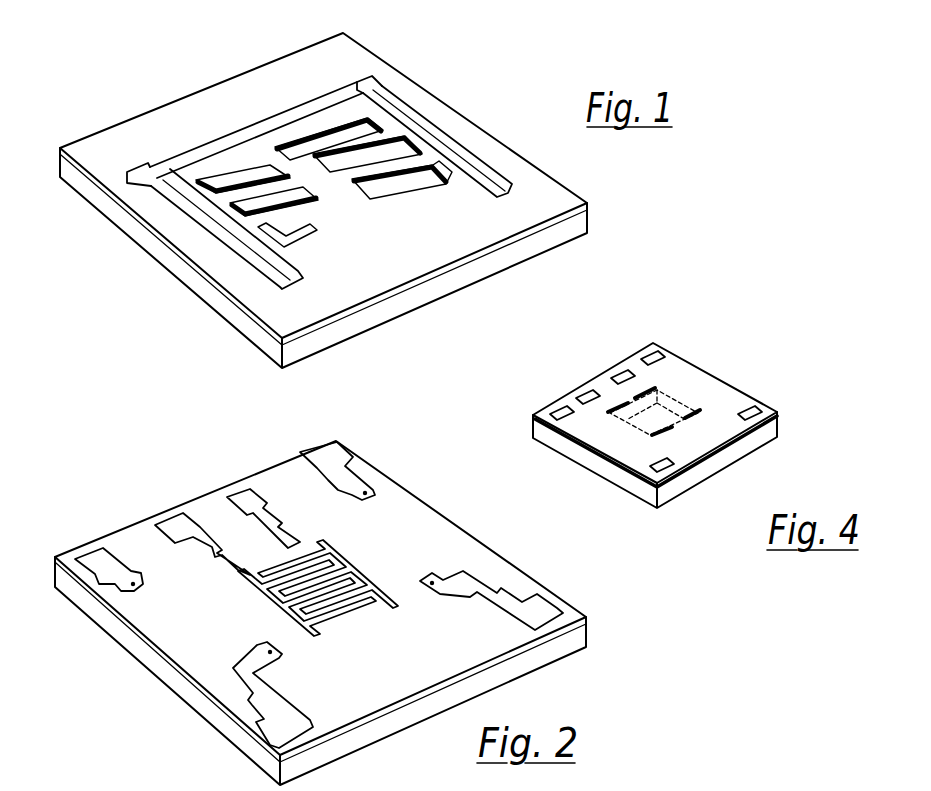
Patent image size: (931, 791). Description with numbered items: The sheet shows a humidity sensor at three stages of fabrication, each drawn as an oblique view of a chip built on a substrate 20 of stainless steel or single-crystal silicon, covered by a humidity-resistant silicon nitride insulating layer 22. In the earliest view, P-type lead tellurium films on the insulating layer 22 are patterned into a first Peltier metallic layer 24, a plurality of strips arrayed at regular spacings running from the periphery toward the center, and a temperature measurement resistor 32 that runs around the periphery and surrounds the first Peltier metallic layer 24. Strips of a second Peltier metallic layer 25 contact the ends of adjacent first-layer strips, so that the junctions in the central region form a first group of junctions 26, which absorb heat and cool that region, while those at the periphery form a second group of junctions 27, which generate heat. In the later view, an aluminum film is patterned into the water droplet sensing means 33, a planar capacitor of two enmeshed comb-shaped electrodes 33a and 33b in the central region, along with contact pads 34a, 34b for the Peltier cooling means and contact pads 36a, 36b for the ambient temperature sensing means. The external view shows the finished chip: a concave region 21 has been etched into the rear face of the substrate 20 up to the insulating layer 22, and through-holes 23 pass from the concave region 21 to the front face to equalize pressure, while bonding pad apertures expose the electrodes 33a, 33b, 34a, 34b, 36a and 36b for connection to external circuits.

In FIG. 1, the substrate 20 is at (548, 238).
In FIG. 2, the substrate 20 is at (550, 652).
In FIG. 4, the substrate 20 is at (755, 443).
In FIG. 4, the concave region 21 is at (638, 425).
In FIG. 1, the insulating layer 22 is at (525, 183).
In FIG. 2, the insulating layer 22 is at (445, 537).
In FIG. 4, the insulating layer 22 is at (723, 395).
In FIG. 4, the through-holes 23 is at (698, 408).
In FIG. 1, the first Peltier metallic layer 24 is at (308, 228).
In FIG. 1, the second Peltier metallic layer 25 is at (446, 183).
In FIG. 1, the first group of junctions 26 is at (288, 176).
In FIG. 1, the second group of junctions 27 is at (197, 178).
In FIG. 1, the temperature measurement resistor 32 is at (374, 79).
In FIG. 2, the water droplet sensing means 33 is at (270, 416).
In FIG. 2, the comb-shaped electrode 33a is at (181, 517).
In FIG. 4, the comb-shaped electrode 33a is at (583, 390).
In FIG. 2, the comb-shaped electrode 33b is at (248, 495).
In FIG. 4, the comb-shaped electrode 33b is at (622, 362).
In FIG. 2, the contact pad 34a is at (248, 732).
In FIG. 4, the contact pad 34a is at (662, 470).
In FIG. 2, the contact pad 34b is at (538, 610).
In FIG. 4, the contact pad 34b is at (750, 408).
In FIG. 2, the contact pad 36a is at (102, 556).
In FIG. 4, the contact pad 36a is at (553, 408).
In FIG. 2, the contact pad 36b is at (335, 468).
In FIG. 4, the contact pad 36b is at (653, 345).